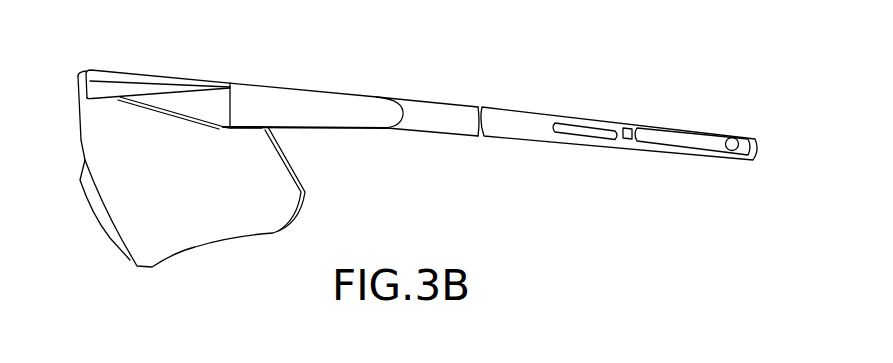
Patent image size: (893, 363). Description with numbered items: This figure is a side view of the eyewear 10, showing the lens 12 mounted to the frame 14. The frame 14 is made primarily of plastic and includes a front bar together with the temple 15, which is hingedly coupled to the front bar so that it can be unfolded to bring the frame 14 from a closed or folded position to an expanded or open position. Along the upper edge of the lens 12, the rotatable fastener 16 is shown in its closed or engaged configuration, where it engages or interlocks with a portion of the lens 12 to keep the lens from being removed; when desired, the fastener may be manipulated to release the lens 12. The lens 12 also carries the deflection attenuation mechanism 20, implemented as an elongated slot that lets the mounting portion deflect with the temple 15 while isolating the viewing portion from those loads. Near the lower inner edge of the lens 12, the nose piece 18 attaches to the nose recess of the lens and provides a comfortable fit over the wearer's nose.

The eyewear 10 is at (579, 56).
The lens 12 is at (150, 267).
The frame 14 is at (435, 108).
The temple 15 is at (517, 108).
The rotatable fastener 16 is at (97, 82).
The nose piece 18 is at (112, 238).
The deflection attenuation mechanism 20 is at (198, 132).